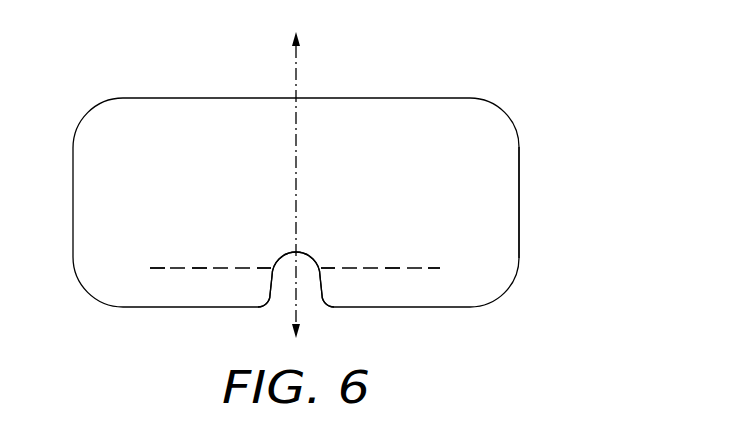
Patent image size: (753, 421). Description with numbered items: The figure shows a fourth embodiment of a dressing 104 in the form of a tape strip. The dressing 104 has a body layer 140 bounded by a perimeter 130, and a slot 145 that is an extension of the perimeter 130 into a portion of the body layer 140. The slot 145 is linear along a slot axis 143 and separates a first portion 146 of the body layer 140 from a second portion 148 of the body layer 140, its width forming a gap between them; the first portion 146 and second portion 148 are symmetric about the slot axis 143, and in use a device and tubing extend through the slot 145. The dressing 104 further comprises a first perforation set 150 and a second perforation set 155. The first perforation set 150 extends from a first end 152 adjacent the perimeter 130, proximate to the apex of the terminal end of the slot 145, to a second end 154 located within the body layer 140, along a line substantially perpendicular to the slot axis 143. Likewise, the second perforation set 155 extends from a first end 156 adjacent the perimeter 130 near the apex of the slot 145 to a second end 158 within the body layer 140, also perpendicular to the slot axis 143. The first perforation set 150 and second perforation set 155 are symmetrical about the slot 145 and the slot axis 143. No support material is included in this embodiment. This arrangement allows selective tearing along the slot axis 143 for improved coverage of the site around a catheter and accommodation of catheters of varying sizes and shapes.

The dressing 104 is at (364, 197).
The perimeter 130 is at (222, 97).
The body layer 140 is at (502, 193).
The slot axis 143 is at (297, 68).
The slot 145 is at (281, 286).
The first portion 146 is at (206, 300).
The second portion 148 is at (426, 300).
The first perforation set 150 is at (389, 267).
The first end 152 is at (322, 267).
The second end 154 is at (440, 267).
The second perforation set 155 is at (200, 267).
The first end 156 is at (272, 267).
The second end 158 is at (152, 267).